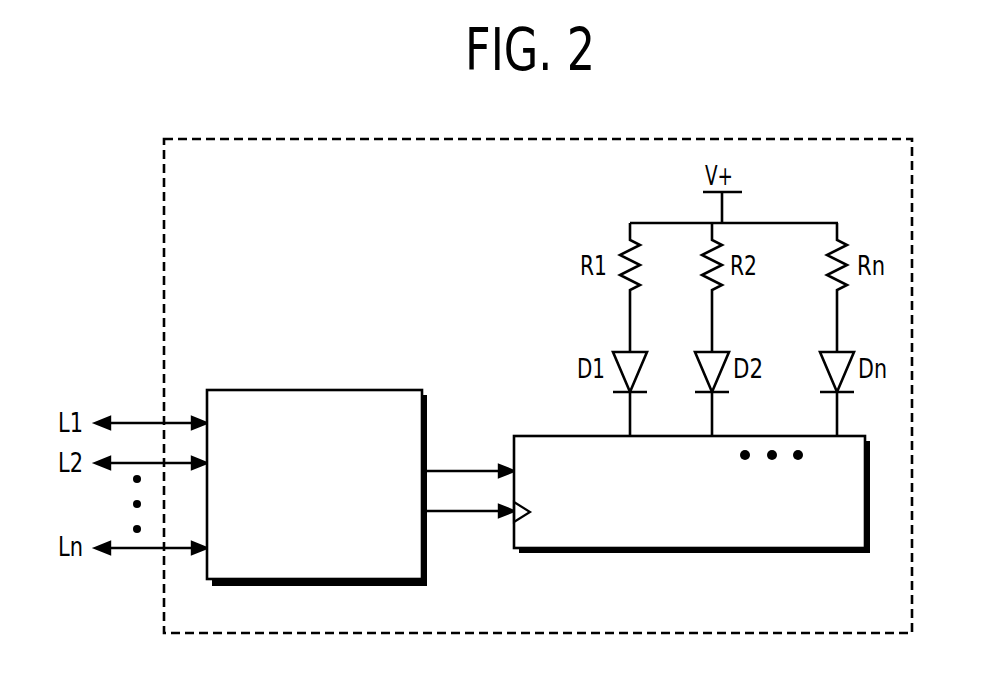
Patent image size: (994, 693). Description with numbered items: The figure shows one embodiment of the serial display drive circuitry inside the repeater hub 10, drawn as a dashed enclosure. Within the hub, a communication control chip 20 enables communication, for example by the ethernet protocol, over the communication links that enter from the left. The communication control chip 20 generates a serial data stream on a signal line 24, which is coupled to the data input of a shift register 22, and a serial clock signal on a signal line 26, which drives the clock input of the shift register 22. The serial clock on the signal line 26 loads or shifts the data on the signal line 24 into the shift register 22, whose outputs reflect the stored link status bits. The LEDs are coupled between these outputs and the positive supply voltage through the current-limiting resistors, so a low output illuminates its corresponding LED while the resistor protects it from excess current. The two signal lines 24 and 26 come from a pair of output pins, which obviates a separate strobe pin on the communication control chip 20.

The repeater hub 10 is at (237, 197).
The communication control chip 20 is at (328, 527).
The shift register 22 is at (790, 539).
The signal line 24 is at (458, 467).
The signal line 26 is at (458, 513).